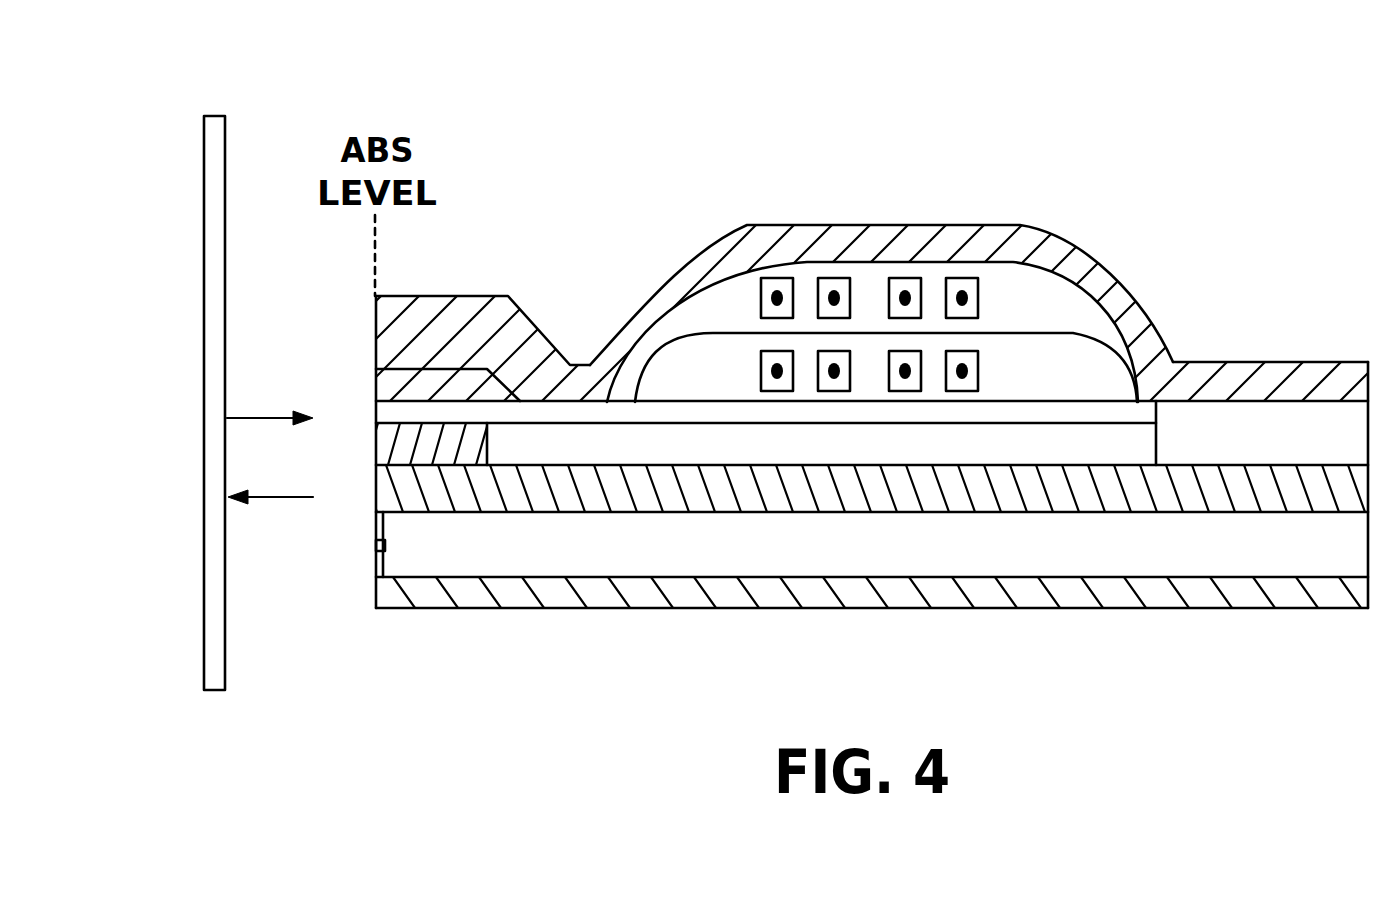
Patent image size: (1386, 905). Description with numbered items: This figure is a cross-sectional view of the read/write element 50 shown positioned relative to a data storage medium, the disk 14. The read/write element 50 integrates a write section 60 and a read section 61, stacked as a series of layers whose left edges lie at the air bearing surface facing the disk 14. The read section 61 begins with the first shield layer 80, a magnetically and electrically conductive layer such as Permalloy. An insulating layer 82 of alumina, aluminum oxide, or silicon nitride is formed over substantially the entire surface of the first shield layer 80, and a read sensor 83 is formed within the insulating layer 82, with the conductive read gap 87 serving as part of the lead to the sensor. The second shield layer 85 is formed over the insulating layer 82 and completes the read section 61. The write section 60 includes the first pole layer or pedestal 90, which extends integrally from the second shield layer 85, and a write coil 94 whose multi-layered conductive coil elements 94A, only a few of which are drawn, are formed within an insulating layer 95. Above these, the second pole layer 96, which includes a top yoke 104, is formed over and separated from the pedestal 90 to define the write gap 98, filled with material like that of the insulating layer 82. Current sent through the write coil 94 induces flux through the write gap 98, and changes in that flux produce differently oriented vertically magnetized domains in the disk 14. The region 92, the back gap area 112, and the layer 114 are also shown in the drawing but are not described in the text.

The disk 14 is at (215, 333).
The read/write element 50 is at (1047, 111).
The write section 60 is at (267, 293).
The read section 61 is at (283, 613).
The first shield layer 80 is at (670, 597).
The insulating layer 82 is at (1091, 557).
The read sensor 83 is at (377, 547).
The second shield layer 85 is at (698, 472).
The read gap 87 is at (380, 562).
The first pole layer 90 is at (377, 447).
The pole tip layer 92 is at (488, 440).
The write coil 94 is at (1097, 223).
The coil elements 94A is at (963, 278).
The insulating layer 95 is at (1065, 307).
The second pole layer 96 is at (376, 380).
The write gap 98 is at (377, 415).
The top yoke 104 is at (807, 247).
The back gap region 112 is at (1147, 447).
The back gap layer 114 is at (1165, 408).